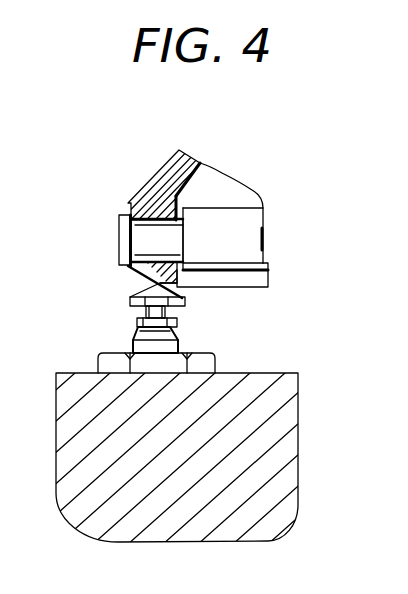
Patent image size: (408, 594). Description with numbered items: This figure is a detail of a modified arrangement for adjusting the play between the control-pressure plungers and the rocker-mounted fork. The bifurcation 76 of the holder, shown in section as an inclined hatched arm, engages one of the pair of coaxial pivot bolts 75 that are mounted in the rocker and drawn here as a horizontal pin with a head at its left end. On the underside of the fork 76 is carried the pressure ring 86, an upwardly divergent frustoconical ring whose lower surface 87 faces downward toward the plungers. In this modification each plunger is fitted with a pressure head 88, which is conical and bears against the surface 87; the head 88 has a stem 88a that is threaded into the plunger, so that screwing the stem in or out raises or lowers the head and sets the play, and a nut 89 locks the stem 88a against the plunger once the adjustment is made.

The pivot bolt 75 is at (142, 234).
The bifurcation 76 is at (160, 189).
The pressure ring 86 is at (128, 270).
The lower surface 87 is at (145, 286).
The pressure head 88 is at (185, 302).
The stem 88a is at (146, 311).
The nut 89 is at (177, 322).